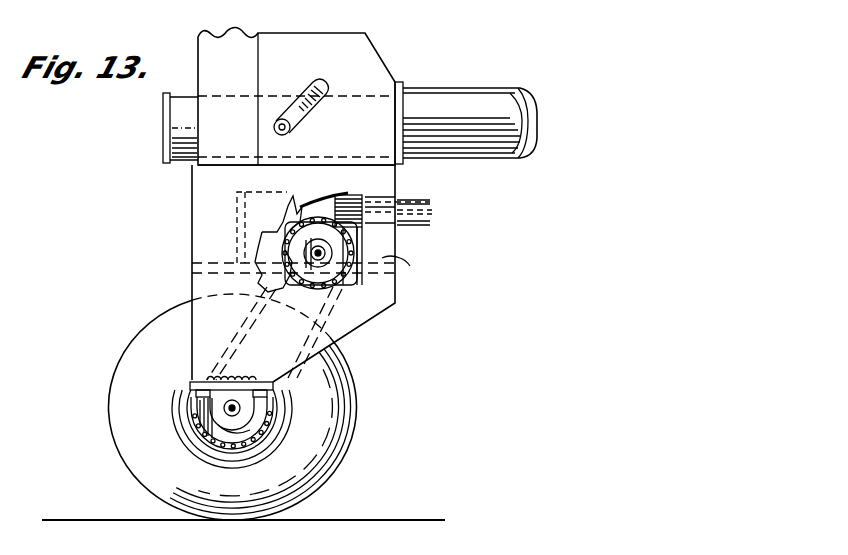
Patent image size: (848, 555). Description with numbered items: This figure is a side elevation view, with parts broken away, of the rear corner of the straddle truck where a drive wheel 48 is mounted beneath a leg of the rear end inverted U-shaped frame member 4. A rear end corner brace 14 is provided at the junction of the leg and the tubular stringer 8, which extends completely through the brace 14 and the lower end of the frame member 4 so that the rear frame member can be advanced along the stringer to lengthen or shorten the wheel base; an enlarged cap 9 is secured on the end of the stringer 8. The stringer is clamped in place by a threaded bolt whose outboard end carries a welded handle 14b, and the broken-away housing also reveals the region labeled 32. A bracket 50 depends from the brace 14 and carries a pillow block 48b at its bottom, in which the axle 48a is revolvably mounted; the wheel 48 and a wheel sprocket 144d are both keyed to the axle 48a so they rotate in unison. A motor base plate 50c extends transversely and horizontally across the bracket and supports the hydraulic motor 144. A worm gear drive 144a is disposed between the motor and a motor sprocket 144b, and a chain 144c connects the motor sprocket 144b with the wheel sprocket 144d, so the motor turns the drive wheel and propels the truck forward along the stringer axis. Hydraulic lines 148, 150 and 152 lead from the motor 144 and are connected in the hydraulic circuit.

The rear end inverted U-shaped frame member 4 is at (256, 32).
The rear end corner brace 14 is at (380, 56).
The housing wall 32 is at (243, 82).
The handle 14b is at (305, 84).
The stringer 8 is at (442, 114).
The enlarged cap 9 is at (160, 110).
The bracket 50 is at (173, 268).
The motor base plate 50c is at (414, 268).
The hydraulic motor 144 is at (300, 208).
The worm gear drive 144a is at (290, 228).
The motor sprocket 144b is at (333, 282).
The chain 144c is at (246, 314).
The wheel sprocket 144d is at (233, 438).
The hydraulic line 148 is at (413, 200).
The hydraulic line 150 is at (428, 226).
The hydraulic line 152 is at (435, 214).
The drive wheel 48 is at (338, 441).
The axle 48a is at (210, 433).
The pillow block 48b is at (207, 400).